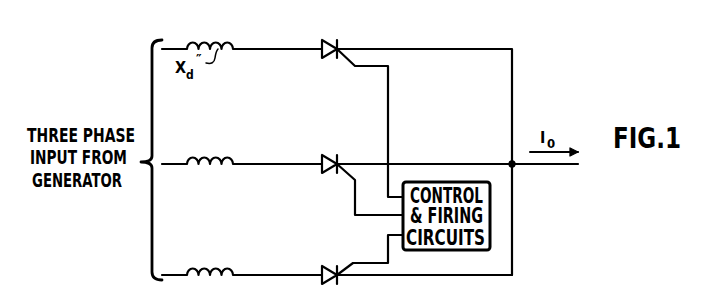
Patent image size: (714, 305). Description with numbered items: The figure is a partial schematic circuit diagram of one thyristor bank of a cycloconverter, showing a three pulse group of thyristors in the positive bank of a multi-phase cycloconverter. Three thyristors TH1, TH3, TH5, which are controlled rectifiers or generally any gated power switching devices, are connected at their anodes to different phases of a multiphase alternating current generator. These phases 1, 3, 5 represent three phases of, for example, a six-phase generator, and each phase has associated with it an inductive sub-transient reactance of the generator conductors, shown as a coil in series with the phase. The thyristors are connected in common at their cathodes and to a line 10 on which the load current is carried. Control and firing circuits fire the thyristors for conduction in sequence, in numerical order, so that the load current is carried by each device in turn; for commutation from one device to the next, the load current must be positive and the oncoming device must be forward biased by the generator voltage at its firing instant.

The phase 1 is at (262, 49).
The phase 3 is at (263, 164).
The phase 5 is at (263, 275).
The thyristor TH1 is at (330, 40).
The thyristor TH3 is at (333, 155).
The thyristor TH5 is at (334, 266).
The line 10 is at (557, 165).